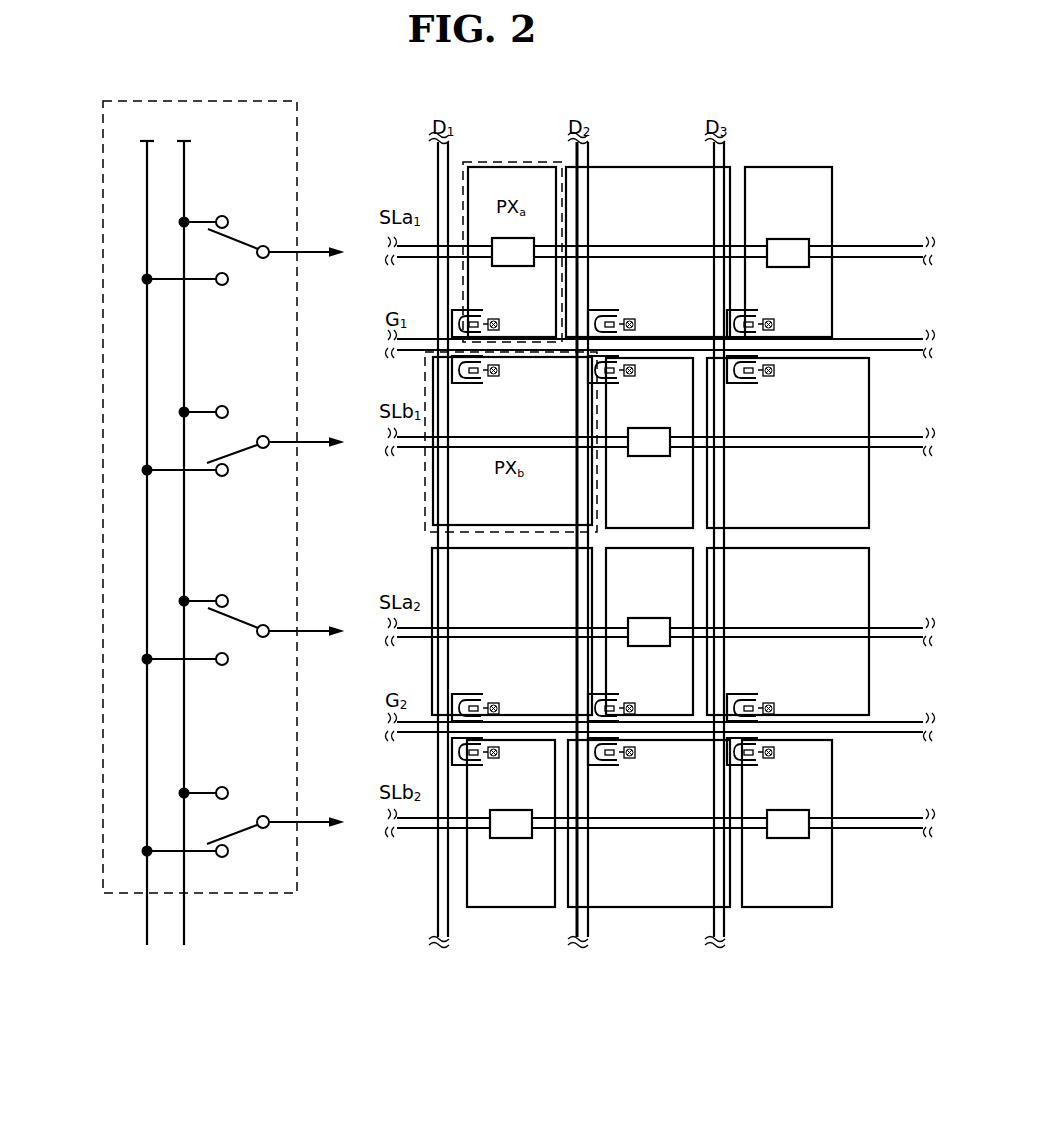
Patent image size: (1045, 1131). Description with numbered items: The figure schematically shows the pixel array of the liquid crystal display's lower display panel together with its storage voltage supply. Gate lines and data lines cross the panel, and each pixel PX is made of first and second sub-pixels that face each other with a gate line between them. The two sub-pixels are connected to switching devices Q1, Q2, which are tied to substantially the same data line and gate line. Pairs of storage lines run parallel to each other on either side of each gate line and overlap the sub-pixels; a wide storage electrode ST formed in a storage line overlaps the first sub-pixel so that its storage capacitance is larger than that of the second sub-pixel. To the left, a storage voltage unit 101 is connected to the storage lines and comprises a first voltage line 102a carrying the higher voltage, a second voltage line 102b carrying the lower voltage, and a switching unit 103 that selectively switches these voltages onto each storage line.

The storage voltage unit 101 is at (297, 170).
The first voltage line 102a is at (147, 182).
The second voltage line 102b is at (184, 253).
The switching unit 103 is at (268, 233).
The pixel PX is at (503, 162).
The storage electrode ST is at (505, 237).
The switching device Q1 is at (478, 311).
The switching device Q2 is at (471, 381).